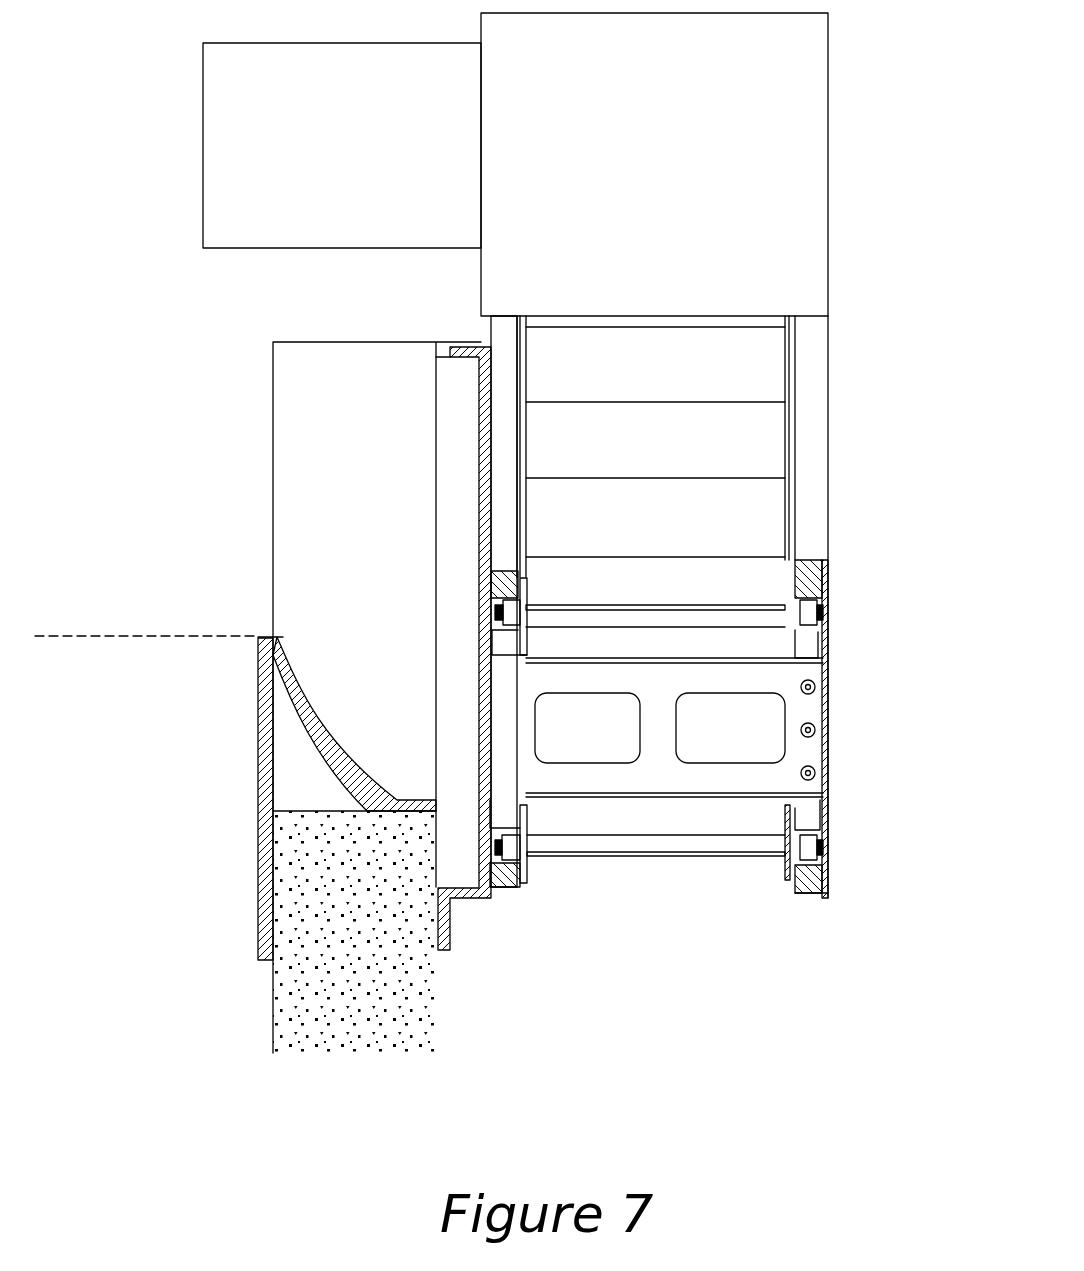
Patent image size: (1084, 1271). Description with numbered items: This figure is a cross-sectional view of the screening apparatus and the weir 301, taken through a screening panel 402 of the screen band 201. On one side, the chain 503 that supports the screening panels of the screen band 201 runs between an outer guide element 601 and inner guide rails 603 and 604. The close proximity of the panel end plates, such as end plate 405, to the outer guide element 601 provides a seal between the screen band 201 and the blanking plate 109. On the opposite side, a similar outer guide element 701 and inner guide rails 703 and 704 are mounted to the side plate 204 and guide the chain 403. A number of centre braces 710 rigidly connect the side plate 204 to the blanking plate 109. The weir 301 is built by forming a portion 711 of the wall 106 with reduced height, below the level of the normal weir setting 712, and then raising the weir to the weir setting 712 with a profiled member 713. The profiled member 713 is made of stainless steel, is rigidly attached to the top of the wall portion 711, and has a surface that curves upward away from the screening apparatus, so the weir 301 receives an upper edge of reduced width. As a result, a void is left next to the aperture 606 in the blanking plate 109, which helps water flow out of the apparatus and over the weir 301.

The wall 106 is at (370, 372).
The blanking plate 109 is at (481, 415).
The screen band 201 is at (715, 432).
The screening panel 402 is at (672, 605).
The outer guide element 701 is at (817, 583).
The inner guide rail 703 is at (822, 655).
The centre brace 710 is at (707, 678).
The side plate 204 is at (827, 725).
The inner guide rail 704 is at (800, 823).
The chain 403 is at (820, 844).
The outer guide element 601 is at (500, 572).
The chain 503 is at (494, 613).
The inner guide rail 603 is at (503, 632).
The end plate 405 is at (498, 665).
The inner guide rail 604 is at (528, 834).
The aperture 606 is at (487, 743).
The weir setting 712 is at (102, 636).
The weir 301 is at (237, 777).
The profiled member 713 is at (335, 765).
The wall portion 711 is at (340, 1030).